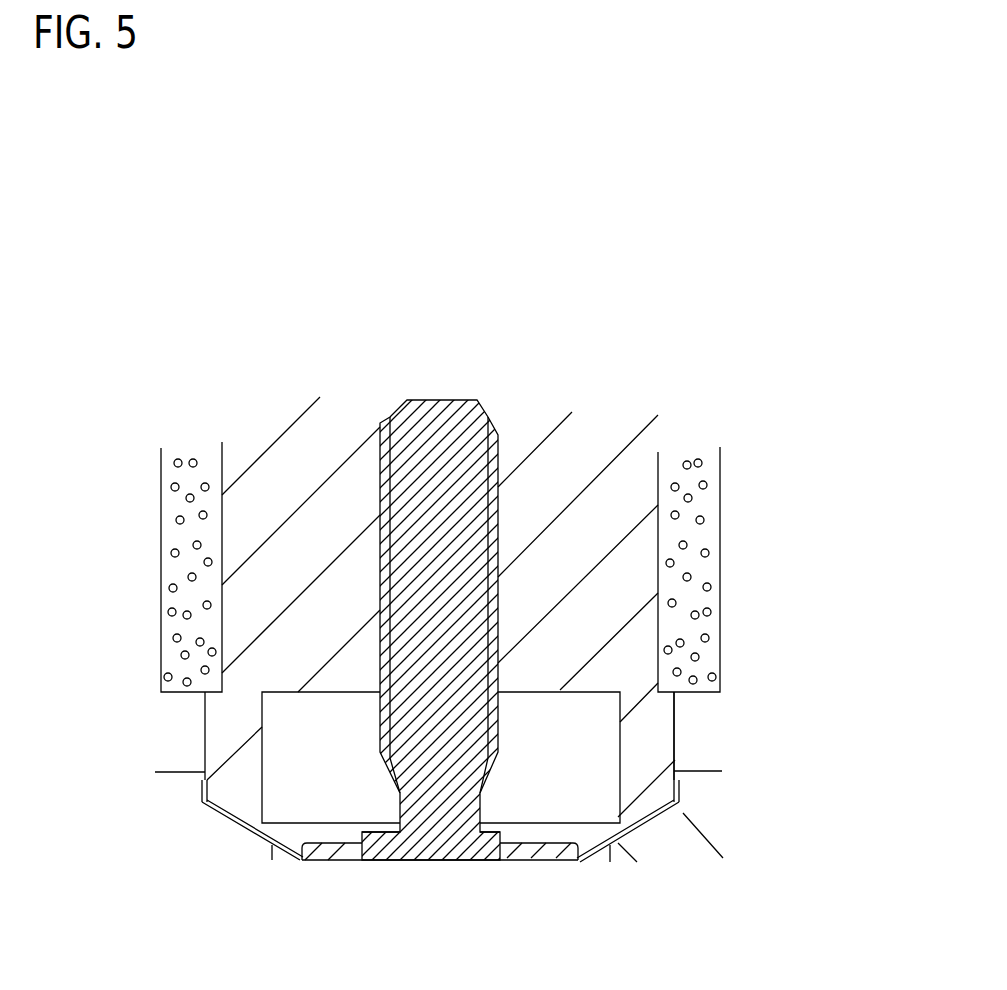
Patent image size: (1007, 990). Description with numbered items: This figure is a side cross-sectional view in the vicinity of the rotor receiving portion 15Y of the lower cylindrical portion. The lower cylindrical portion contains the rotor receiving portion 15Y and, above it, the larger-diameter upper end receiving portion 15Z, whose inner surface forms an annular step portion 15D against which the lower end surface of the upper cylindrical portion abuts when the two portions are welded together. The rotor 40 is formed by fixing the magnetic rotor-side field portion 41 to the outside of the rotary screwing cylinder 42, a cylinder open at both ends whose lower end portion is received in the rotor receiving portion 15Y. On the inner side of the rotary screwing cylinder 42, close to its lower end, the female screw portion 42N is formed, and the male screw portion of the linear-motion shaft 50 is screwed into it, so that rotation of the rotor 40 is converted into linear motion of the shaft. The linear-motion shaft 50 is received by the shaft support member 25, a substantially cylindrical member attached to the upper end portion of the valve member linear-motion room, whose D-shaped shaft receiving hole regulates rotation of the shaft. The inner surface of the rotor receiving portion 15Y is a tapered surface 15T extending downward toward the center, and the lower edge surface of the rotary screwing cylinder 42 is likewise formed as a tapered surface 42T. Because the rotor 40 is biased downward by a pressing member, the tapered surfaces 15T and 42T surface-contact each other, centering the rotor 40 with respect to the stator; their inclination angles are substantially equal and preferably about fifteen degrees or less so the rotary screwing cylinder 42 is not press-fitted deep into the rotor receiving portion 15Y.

The linear-motion shaft 50 is at (439, 398).
The rotary screwing cylinder 42 is at (580, 445).
The female screw portion 42N is at (470, 557).
The tapered surface 42T is at (230, 822).
The rotor 40 is at (746, 471).
The rotor-side field portion 41 is at (703, 533).
The rotor receiving portion 15Y is at (593, 814).
The upper end receiving portion 15Z is at (698, 737).
The annular step portion 15D is at (192, 772).
The tapered surface 15T is at (265, 831).
The shaft support member 25 is at (545, 855).